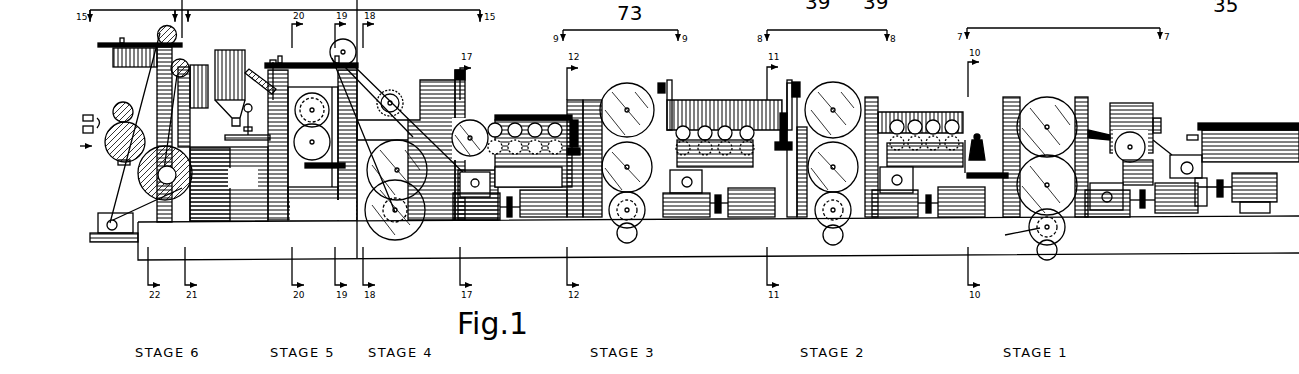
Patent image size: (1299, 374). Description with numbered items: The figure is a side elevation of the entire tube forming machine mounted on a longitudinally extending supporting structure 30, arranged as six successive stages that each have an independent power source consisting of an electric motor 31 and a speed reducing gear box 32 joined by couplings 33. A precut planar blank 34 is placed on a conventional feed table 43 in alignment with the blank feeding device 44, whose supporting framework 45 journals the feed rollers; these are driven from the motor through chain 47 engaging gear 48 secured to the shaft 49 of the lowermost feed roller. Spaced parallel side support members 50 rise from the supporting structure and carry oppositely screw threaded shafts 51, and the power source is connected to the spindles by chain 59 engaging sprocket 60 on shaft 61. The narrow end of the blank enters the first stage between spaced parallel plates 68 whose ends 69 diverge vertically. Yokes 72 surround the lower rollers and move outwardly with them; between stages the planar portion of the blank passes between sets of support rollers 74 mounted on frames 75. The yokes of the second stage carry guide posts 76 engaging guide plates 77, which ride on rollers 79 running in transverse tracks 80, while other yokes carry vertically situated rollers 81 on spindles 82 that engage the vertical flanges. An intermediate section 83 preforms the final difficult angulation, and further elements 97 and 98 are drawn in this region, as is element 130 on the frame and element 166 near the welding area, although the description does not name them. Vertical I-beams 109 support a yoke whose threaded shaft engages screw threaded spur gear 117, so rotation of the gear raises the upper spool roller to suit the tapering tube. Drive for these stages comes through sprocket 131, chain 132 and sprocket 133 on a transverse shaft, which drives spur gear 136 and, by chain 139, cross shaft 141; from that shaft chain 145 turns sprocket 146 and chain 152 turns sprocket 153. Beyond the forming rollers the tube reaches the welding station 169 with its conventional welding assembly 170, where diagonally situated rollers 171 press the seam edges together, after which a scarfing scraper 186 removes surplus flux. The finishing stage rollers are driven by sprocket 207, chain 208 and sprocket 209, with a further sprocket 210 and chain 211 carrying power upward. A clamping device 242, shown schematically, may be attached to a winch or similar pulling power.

The supporting structure 30 is at (1267, 243).
The electric motor 31 is at (1268, 202).
The speed reducing gear box 32 is at (1205, 215).
The couplings 33 is at (1265, 185).
The planar blank 34 is at (1262, 135).
The feed table 43 is at (1240, 158).
The blank feeding device 44 is at (1138, 103).
The supporting framework 45 is at (1168, 113).
The chain 47 is at (1182, 162).
The gear 48 is at (1121, 174).
The shaft 49 is at (1130, 130).
The side support members 50 is at (1012, 100).
The screw threaded shafts 51 is at (1047, 125).
The chain 59 is at (1068, 233).
The sprocket 60 is at (1040, 240).
The shaft 61 is at (1013, 240).
The spaced and parallel plates 68 is at (1088, 125).
The ends of plates 69 is at (1105, 128).
The yokes 72 is at (992, 157).
The support rollers 74 is at (710, 132).
The frames 75 is at (940, 120).
The guide posts 76 is at (776, 145).
The guide plates 77 is at (705, 118).
The rollers 79 is at (660, 90).
The tracks 80 is at (661, 86).
The vertically situated rollers 81 is at (562, 152).
The spindles 82 is at (574, 119).
The intermediate section 83 is at (528, 112).
The roll 97 is at (480, 125).
The roll 98 is at (470, 120).
The I-beams 109 is at (250, 100).
The screw threaded spur gear 117 is at (360, 62).
The frame 130 is at (311, 139).
The sprocket 131 is at (476, 200).
The chain 132 is at (420, 240).
The sprocket 133 is at (380, 240).
The spur gear 136 is at (332, 192).
The chain 139 is at (415, 100).
The cross shaft 141 is at (405, 95).
The chain 145 is at (357, 52).
The sprocket 146 is at (356, 44).
The chain 152 is at (380, 92).
The sprocket 153 is at (312, 92).
The chute 166 is at (262, 68).
The welding station 169 is at (235, 33).
The welding assembly 170 is at (247, 80).
The diagonally situated rollers 171 is at (229, 184).
The scarfing scraper 186 is at (165, 100).
The sprocket 207 is at (105, 213).
The chain 208 is at (125, 168).
The sprocket 209 is at (165, 196).
The sprocket 210 is at (132, 210).
The chain 211 is at (144, 130).
The clamping device 242 is at (94, 117).